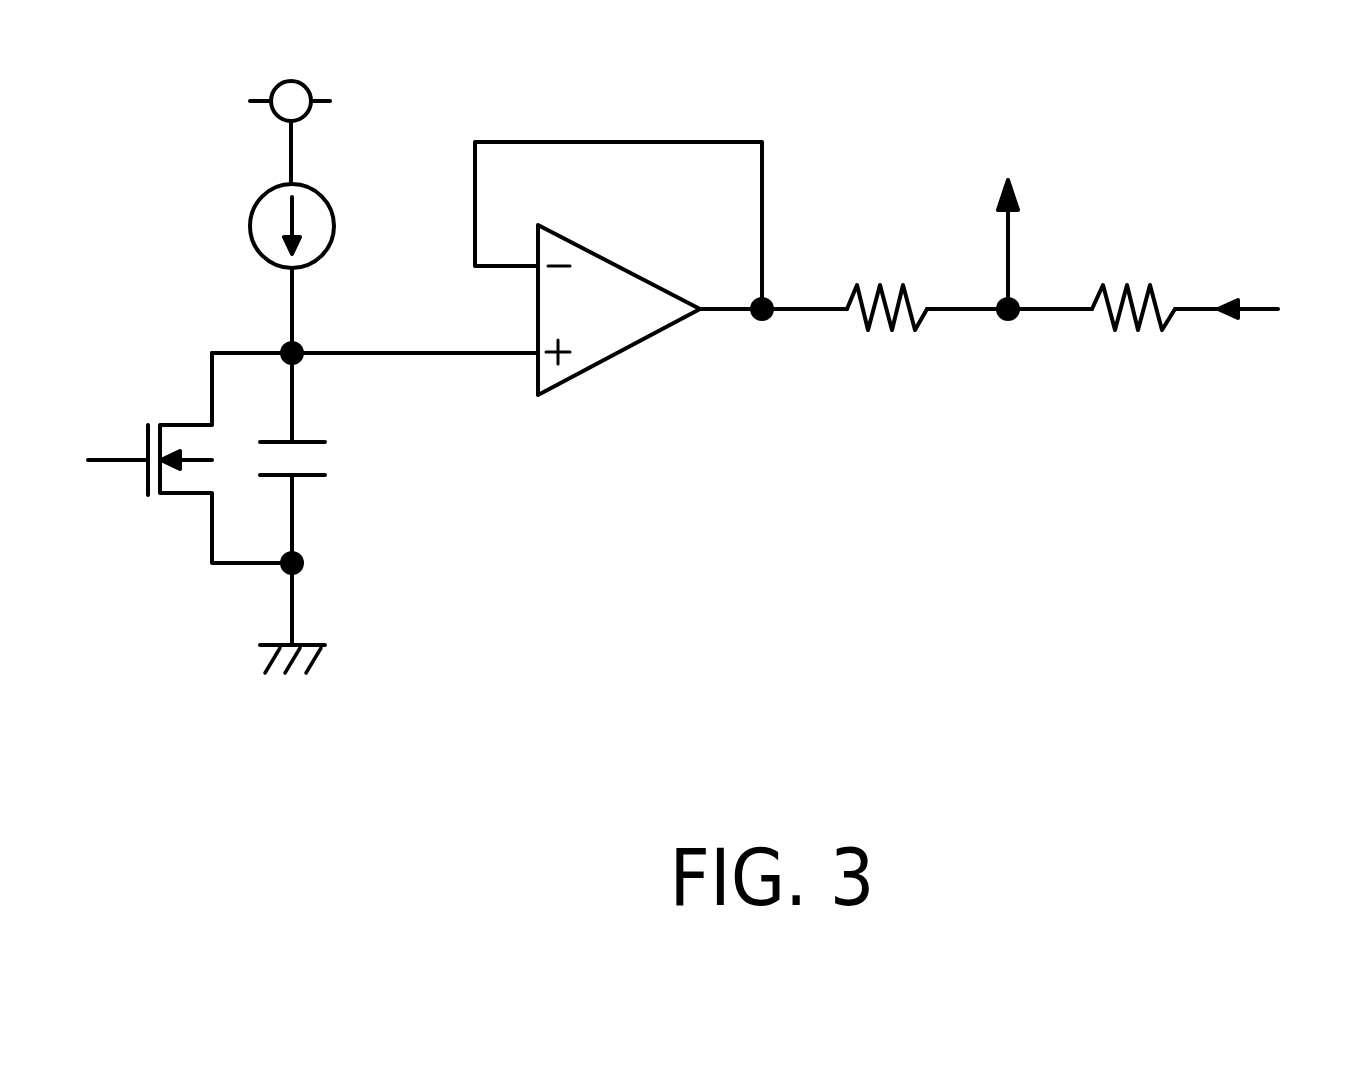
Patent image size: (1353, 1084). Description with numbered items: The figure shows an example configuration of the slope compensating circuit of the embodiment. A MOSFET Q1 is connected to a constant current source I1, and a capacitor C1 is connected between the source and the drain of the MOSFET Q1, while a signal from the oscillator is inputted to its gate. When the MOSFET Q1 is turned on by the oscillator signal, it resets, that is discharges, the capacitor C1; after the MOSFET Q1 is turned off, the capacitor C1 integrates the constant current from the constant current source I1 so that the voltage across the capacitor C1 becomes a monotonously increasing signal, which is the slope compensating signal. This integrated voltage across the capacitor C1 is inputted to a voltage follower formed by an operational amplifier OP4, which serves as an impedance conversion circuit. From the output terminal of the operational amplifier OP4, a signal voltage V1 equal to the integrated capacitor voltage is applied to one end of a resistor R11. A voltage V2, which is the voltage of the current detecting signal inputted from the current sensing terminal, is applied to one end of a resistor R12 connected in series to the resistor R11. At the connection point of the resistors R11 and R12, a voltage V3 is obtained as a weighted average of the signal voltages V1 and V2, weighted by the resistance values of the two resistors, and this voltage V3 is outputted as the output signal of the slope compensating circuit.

The constant current source I1 is at (325, 200).
The MOSFET Q1 is at (153, 412).
The capacitor C1 is at (333, 463).
The operational amplifier OP4 is at (617, 352).
The signal voltage V1 is at (790, 294).
The resistor R11 is at (882, 277).
The voltage V3 is at (1008, 230).
The resistor R12 is at (1127, 275).
The voltage V2 is at (1275, 305).